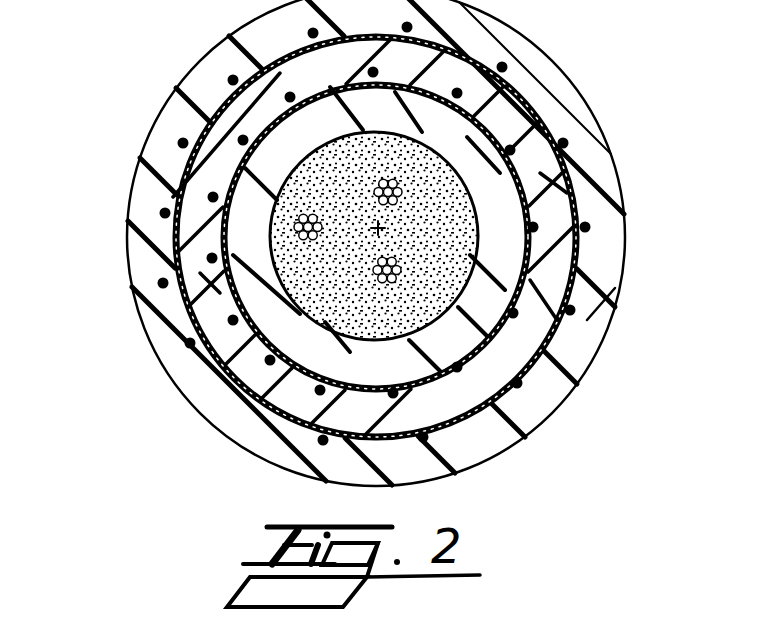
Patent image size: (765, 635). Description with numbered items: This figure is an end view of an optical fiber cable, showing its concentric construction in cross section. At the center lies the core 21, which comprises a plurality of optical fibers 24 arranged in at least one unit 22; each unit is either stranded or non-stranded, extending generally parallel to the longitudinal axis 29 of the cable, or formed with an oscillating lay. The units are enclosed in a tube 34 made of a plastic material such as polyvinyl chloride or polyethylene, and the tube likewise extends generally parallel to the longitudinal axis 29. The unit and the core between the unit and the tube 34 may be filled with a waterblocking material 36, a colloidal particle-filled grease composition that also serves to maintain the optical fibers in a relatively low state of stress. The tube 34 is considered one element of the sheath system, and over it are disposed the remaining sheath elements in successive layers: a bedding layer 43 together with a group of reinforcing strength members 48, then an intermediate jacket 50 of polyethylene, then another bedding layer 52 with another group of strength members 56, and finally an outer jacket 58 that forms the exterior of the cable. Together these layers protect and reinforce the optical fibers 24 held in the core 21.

The core 21 is at (232, 362).
The unit 22 is at (212, 282).
The optical fiber 24 is at (298, 228).
The longitudinal axis 29 is at (390, 228).
The tube 34 is at (468, 138).
The waterblocking material 36 is at (323, 163).
The bedding layer 43 is at (293, 325).
The reinforcing strength member 48 is at (515, 315).
The intermediate jacket 50 is at (465, 418).
The bedding layer 52 is at (553, 332).
The strength member 56 is at (521, 383).
The outer jacket 58 is at (540, 402).